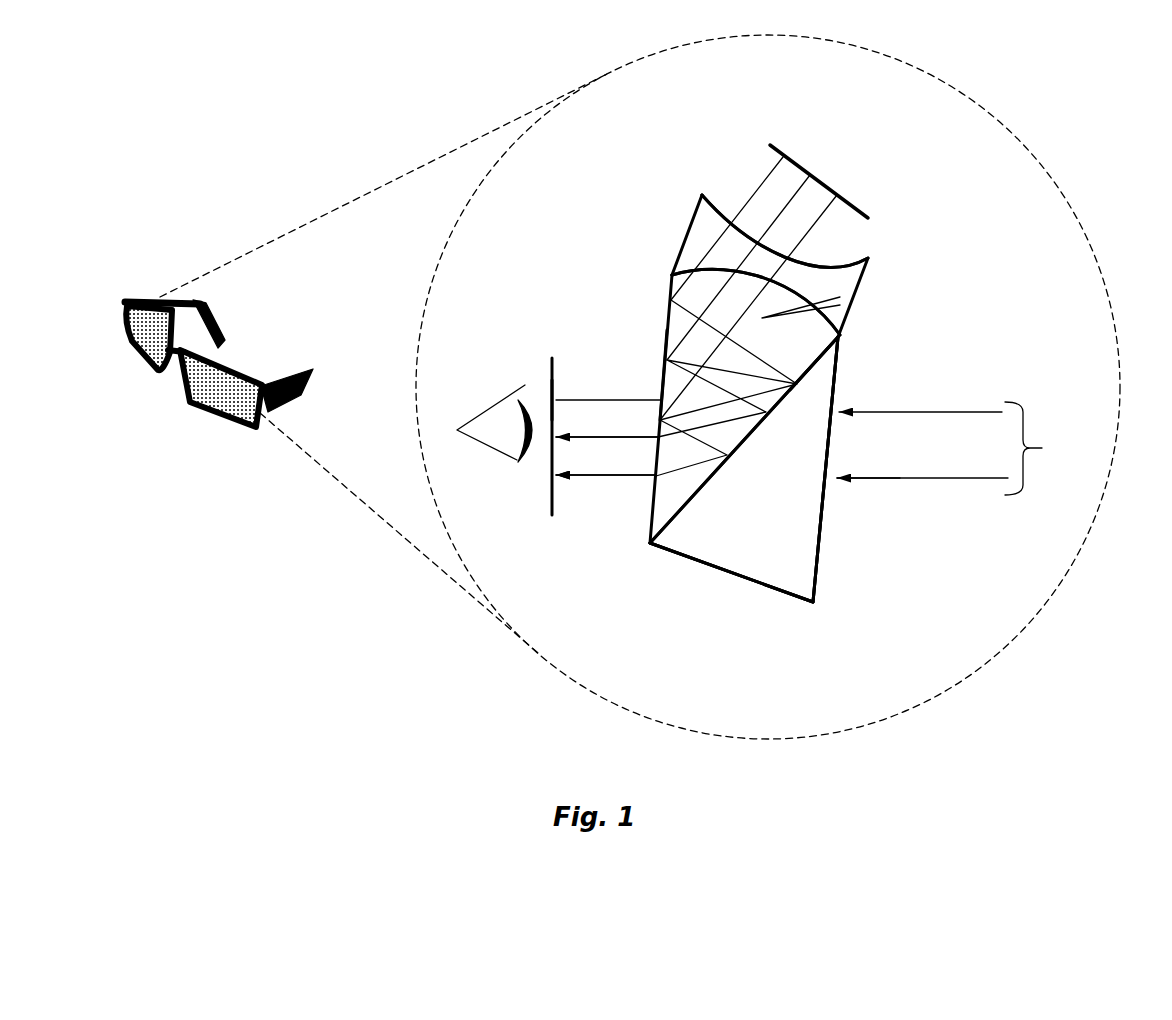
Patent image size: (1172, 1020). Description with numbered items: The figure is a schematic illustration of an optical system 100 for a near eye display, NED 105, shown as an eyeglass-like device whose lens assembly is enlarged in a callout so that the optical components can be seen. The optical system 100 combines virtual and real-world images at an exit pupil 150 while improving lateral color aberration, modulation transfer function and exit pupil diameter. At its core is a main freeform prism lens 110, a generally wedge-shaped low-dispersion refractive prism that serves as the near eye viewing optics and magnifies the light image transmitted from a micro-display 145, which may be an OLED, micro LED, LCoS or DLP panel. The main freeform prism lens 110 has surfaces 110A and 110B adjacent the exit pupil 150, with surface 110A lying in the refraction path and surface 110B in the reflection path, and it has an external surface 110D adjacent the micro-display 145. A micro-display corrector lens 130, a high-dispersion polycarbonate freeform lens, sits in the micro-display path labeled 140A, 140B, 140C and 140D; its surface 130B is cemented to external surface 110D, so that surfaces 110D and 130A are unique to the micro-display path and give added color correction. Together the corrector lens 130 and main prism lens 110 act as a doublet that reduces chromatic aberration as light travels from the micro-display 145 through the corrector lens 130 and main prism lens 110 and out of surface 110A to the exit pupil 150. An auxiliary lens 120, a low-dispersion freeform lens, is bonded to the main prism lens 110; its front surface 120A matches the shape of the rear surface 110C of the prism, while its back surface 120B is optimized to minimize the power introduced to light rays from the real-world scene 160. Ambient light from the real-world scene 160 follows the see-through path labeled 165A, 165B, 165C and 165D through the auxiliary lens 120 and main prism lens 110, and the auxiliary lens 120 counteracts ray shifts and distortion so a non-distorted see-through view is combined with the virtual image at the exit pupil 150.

The optical system 100 is at (736, 130).
The near eye display (NED) 105 is at (172, 412).
The main freeform prism lens 110 is at (667, 322).
The surface 110A is at (662, 500).
The surface 110B is at (672, 277).
The rear surface 110C is at (708, 562).
The external surface 110D is at (840, 305).
The auxiliary lens 120 is at (783, 568).
The front surface 120A is at (692, 497).
The back surface 120B is at (818, 577).
The micro-display corrector lens 130 is at (684, 244).
The surface 130A is at (806, 264).
The surface 130B is at (762, 318).
The micro-display path 140A is at (743, 203).
The micro-display path 140B is at (757, 355).
The micro-display path 140C is at (667, 375).
The micro-display path 140D is at (590, 396).
The micro-display 145 is at (849, 173).
The exit pupil 150 is at (552, 532).
The real-world scene 160 is at (1046, 448).
The see-through path 165A is at (967, 480).
The see-through path 165B is at (803, 478).
The see-through path 165C is at (687, 465).
The see-through path 165D is at (593, 477).